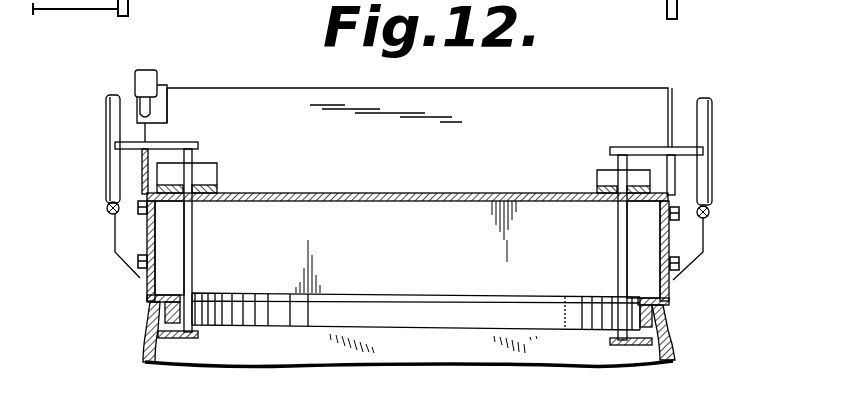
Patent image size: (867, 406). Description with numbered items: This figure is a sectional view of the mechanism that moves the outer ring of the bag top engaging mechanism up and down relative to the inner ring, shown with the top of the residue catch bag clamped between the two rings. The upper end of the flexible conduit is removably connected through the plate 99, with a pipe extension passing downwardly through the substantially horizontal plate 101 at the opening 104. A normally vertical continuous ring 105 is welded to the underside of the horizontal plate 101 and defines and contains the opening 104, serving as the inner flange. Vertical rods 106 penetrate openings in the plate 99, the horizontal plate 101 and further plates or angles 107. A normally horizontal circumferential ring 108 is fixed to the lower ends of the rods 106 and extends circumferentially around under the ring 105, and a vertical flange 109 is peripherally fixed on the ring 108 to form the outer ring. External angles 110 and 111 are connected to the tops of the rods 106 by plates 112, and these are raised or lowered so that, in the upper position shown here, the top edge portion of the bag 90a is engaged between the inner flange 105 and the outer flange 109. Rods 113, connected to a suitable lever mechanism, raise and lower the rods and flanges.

The plate 99 is at (397, 164).
The horizontal plate 101 is at (248, 300).
The opening 104 is at (426, 318).
The vertical continuous ring 105 is at (346, 305).
The vertical rods 106 is at (193, 210).
The plates or angles 107 is at (213, 165).
The horizontal circumferential ring 108 is at (196, 337).
The vertical flange 109 is at (662, 323).
The top edge portion of the bag 90a is at (150, 325).
The angle 110 is at (123, 240).
The angle 111 is at (695, 243).
The plates 112 is at (173, 142).
The rods 113 is at (106, 122).